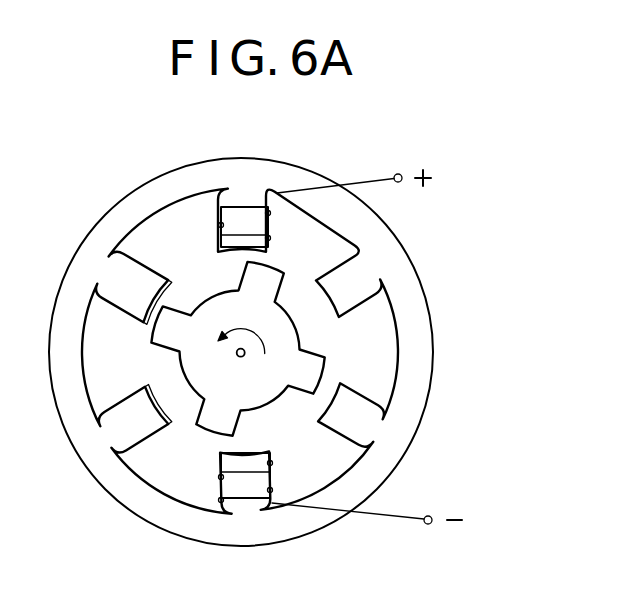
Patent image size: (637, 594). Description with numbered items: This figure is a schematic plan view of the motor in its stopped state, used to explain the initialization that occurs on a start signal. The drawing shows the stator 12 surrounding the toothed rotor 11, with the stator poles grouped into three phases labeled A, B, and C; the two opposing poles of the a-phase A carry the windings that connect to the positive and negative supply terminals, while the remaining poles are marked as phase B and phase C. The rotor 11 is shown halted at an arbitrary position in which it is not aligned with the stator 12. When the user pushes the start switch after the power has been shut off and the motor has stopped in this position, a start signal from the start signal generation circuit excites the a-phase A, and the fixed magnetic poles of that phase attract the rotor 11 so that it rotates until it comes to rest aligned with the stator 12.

The rotor 11 is at (282, 357).
The stator 12 is at (365, 300).
The a-phase A is at (246, 355).
The phase B pole B is at (239, 354).
The phase C pole C is at (236, 353).